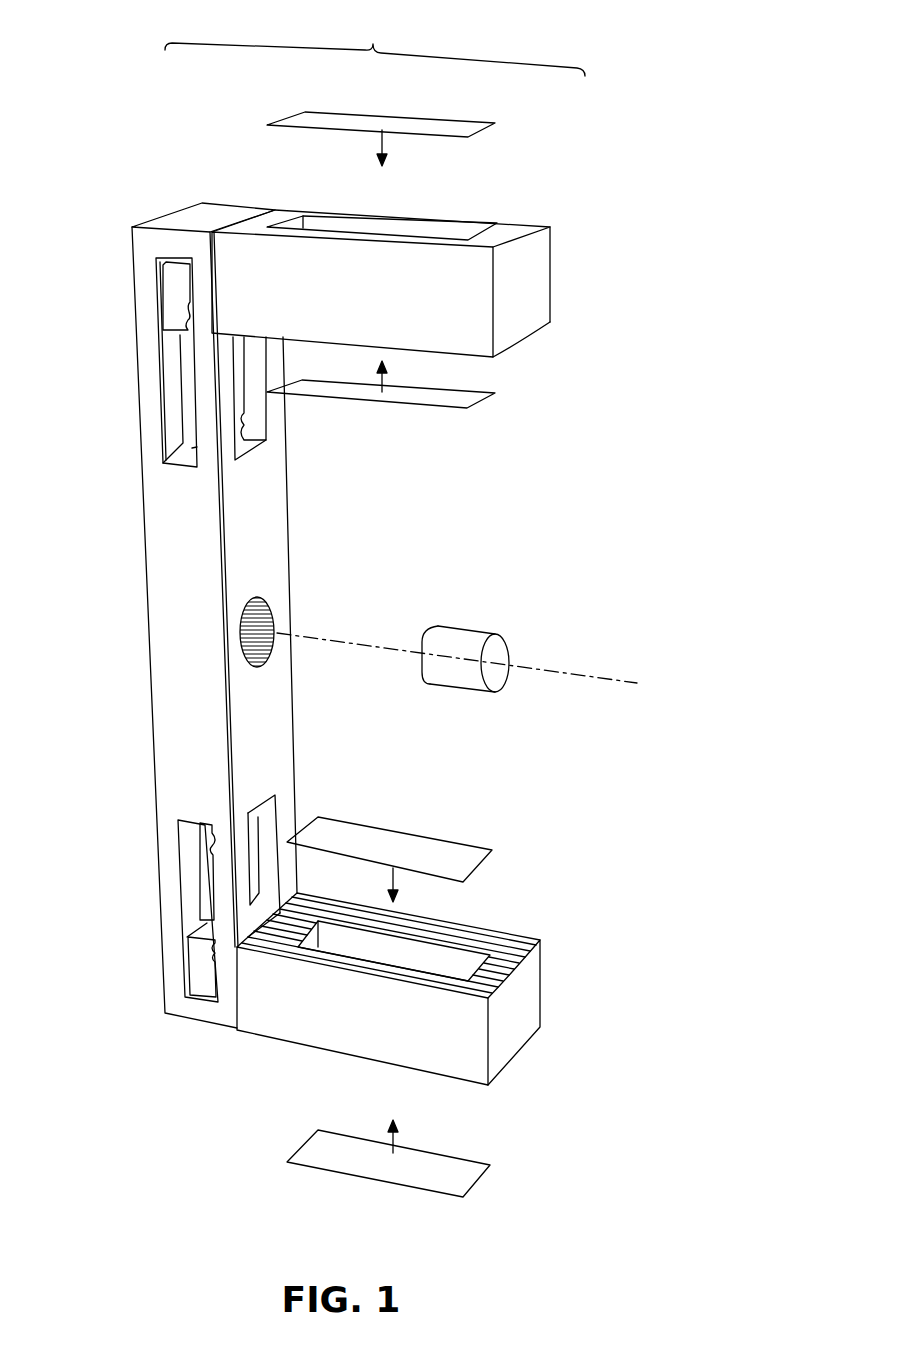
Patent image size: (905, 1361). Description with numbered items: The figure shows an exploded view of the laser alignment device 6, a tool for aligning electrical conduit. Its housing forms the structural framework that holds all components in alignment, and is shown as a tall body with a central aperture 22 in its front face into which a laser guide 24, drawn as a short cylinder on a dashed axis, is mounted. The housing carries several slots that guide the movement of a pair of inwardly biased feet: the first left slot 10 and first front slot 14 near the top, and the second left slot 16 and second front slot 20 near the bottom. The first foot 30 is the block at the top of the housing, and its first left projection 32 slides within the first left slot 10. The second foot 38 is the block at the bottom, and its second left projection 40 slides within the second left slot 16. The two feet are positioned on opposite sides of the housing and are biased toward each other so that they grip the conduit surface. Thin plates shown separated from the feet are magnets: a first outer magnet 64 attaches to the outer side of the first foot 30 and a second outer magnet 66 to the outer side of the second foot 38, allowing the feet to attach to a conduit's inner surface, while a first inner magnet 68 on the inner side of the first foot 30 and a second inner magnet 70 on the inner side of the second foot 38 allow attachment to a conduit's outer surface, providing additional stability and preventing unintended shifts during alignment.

The laser alignment device 6 is at (375, 44).
The first left slot 10 is at (170, 413).
The first front slot 14 is at (257, 418).
The second left slot 16 is at (192, 882).
The second front slot 20 is at (268, 823).
The central aperture 22 is at (273, 625).
The laser guide 24 is at (484, 612).
The first foot 30 is at (410, 198).
The first left projection 32 is at (168, 308).
The second foot 38 is at (361, 1070).
The second left projection 40 is at (197, 965).
The first outer magnet 64 is at (426, 118).
The second outer magnet 66 is at (325, 1158).
The first inner magnet 68 is at (410, 398).
The second inner magnet 70 is at (438, 850).